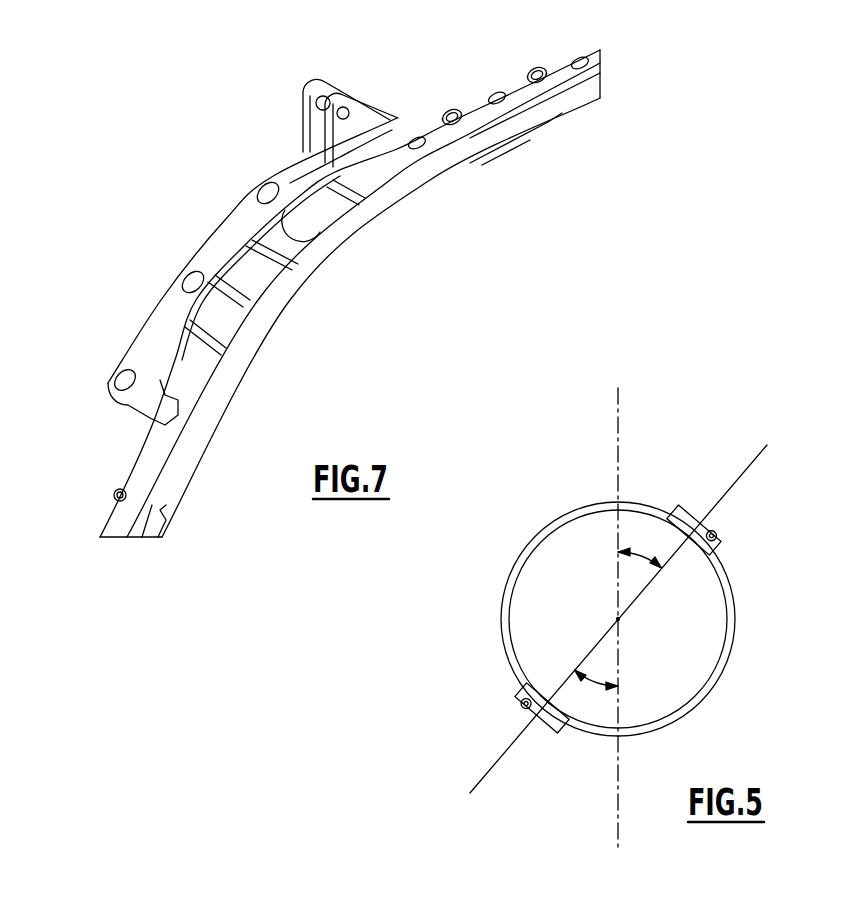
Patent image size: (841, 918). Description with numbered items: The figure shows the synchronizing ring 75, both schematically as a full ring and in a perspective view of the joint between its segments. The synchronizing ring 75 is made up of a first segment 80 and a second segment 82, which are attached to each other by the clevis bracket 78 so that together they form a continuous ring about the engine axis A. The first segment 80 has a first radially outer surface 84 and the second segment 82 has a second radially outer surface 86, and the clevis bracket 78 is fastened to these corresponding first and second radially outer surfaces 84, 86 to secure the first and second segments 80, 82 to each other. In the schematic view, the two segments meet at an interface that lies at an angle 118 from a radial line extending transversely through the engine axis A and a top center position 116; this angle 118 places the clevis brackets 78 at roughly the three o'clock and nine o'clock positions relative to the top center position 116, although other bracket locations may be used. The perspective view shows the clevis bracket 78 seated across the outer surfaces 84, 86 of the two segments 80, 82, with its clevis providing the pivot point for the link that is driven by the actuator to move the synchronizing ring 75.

In FIG. 5, the synchronizing ring 75 is at (730, 573).
In FIG. 7, the clevis bracket 78 is at (225, 243).
In FIG. 5, the clevis bracket 78 is at (700, 505).
In FIG. 7, the first segment 80 is at (243, 340).
In FIG. 5, the first segment 80 is at (607, 512).
In FIG. 7, the second segment 82 is at (370, 212).
In FIG. 5, the second segment 82 is at (722, 662).
In FIG. 7, the first radially outer surface 84 is at (140, 453).
In FIG. 5, the first radially outer surface 84 is at (566, 512).
In FIG. 7, the second radially outer surface 86 is at (434, 127).
In FIG. 5, the second radially outer surface 86 is at (708, 700).
In FIG. 5, the top center position 116 is at (618, 412).
In FIG. 5, the angle 118 is at (645, 552).
In FIG. 5, the engine axis A is at (621, 622).